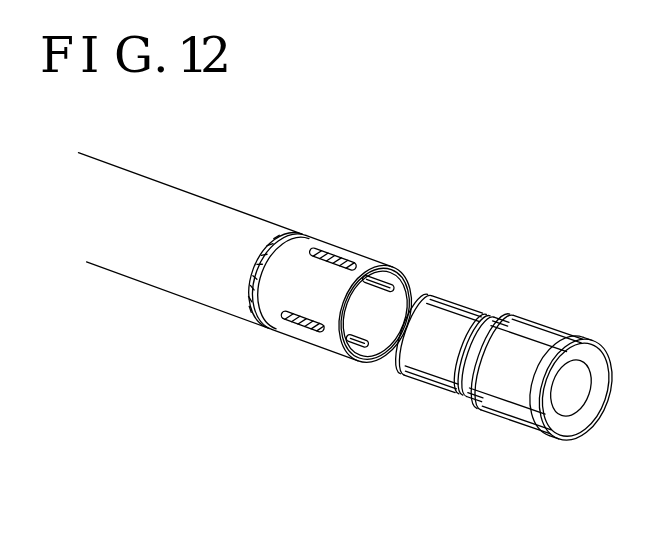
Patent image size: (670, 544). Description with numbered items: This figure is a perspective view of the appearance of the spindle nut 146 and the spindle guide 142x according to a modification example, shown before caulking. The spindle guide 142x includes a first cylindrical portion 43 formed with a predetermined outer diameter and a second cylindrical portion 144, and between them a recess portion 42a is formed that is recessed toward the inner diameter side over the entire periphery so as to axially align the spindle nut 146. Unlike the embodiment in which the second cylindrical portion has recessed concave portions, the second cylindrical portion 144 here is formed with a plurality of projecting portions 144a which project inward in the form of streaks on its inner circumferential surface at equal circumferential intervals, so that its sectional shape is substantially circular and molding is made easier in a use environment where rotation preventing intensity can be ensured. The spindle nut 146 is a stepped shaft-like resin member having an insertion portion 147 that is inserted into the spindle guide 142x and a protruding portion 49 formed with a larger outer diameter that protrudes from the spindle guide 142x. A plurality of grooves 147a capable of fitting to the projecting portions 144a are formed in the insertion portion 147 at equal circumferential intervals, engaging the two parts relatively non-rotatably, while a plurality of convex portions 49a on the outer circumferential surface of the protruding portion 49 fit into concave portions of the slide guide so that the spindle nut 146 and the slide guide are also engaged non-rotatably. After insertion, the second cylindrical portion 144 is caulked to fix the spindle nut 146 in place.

The spindle guide 142x is at (272, 205).
The first cylindrical portion 43 is at (122, 248).
The recess portion 42a is at (262, 326).
The projecting portions 144a is at (355, 240).
The second cylindrical portion 144 is at (298, 333).
The spindle nut 146 is at (515, 233).
The insertion portion 147 is at (408, 370).
The grooves 147a is at (455, 305).
The protruding portion 49 is at (532, 435).
The convex portions 49a is at (547, 318).